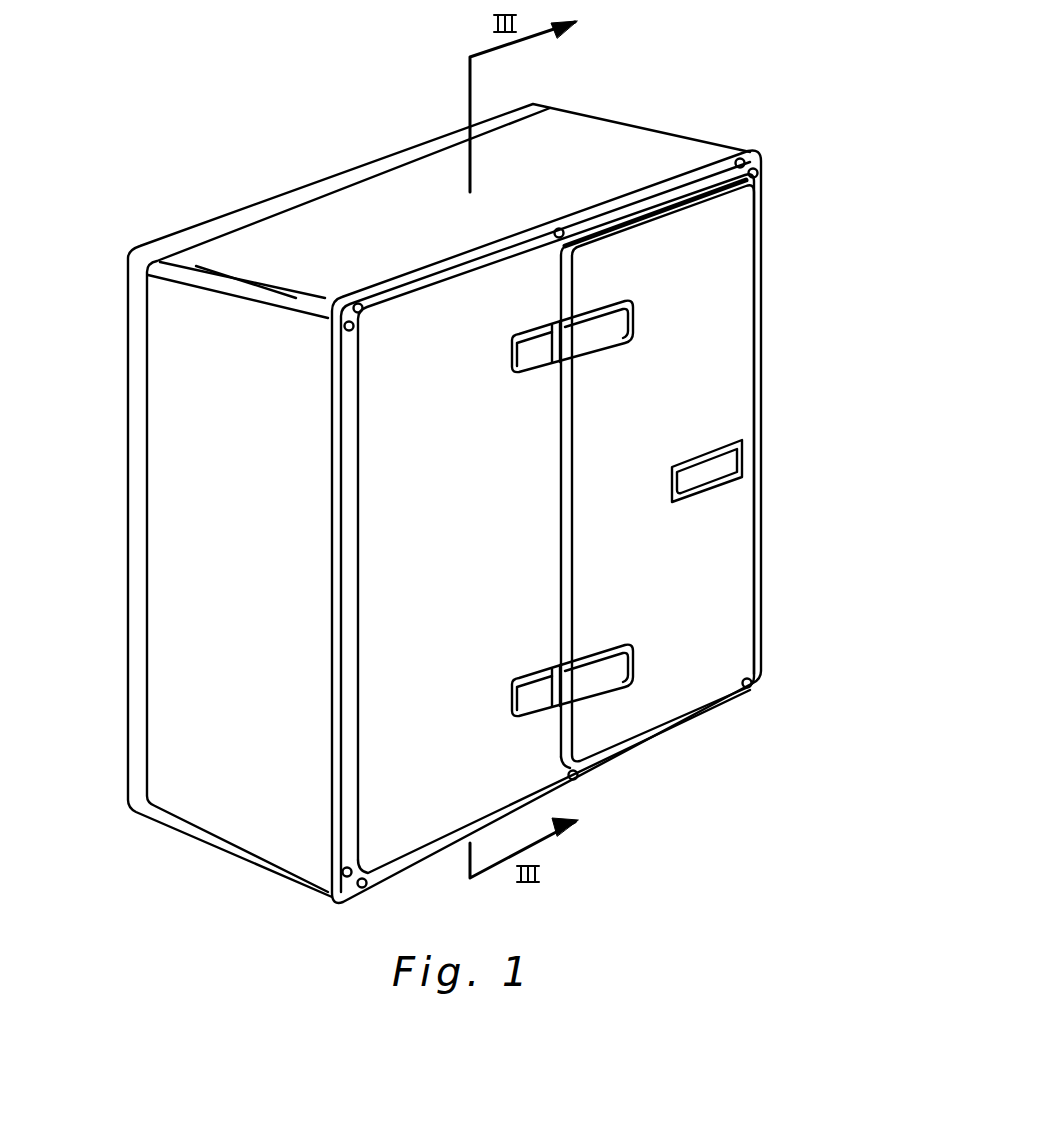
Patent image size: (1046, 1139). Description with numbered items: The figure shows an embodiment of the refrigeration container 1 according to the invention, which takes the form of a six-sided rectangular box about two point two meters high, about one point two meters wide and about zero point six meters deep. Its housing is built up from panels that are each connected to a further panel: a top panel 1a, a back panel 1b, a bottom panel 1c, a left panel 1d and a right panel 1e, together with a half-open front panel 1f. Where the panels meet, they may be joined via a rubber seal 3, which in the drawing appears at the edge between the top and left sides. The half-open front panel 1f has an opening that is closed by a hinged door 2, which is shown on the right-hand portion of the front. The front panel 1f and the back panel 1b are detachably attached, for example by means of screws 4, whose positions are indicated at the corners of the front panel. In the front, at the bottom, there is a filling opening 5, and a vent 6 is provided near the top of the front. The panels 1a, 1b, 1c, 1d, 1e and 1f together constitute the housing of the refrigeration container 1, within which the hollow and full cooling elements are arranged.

The refrigeration container 1 is at (641, 100).
The top panel 1a is at (415, 217).
The back panel 1b is at (265, 198).
The bottom panel 1c is at (673, 733).
The left panel 1d is at (220, 589).
The right panel 1e is at (762, 348).
The half-open front panel 1f is at (474, 548).
The hinged door 2 is at (657, 428).
The rubber seal 3 is at (150, 278).
The screws 4 is at (359, 320).
The filling opening 5 is at (580, 780).
The vent 6 is at (563, 230).